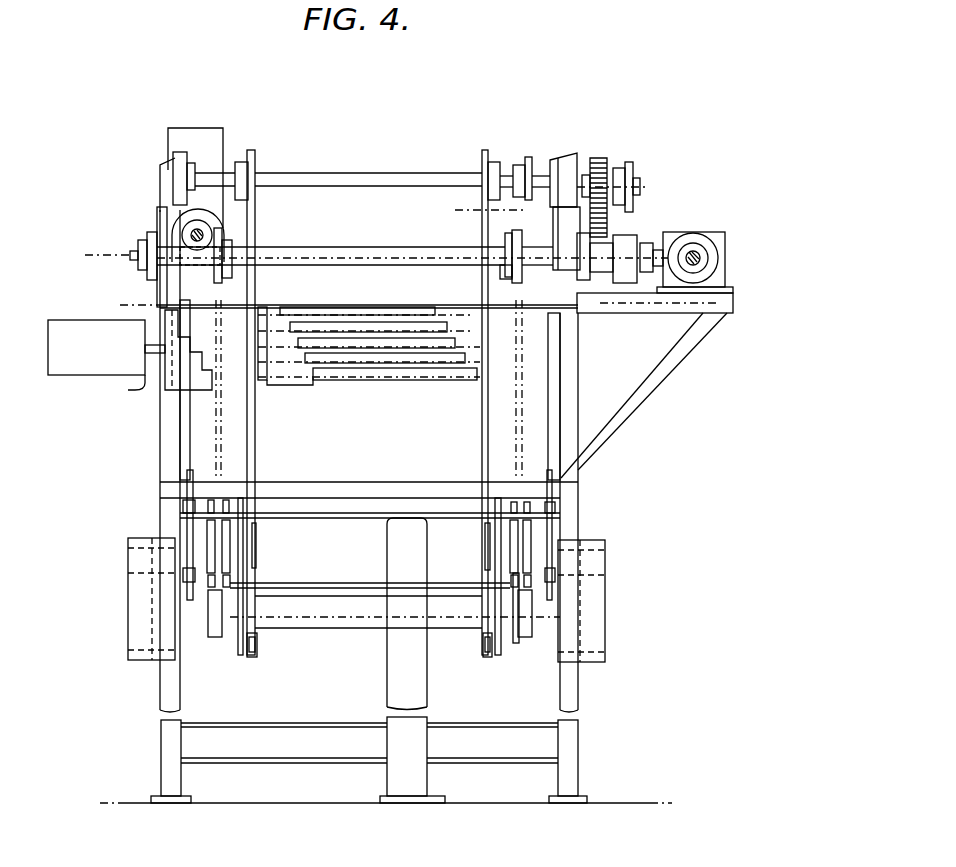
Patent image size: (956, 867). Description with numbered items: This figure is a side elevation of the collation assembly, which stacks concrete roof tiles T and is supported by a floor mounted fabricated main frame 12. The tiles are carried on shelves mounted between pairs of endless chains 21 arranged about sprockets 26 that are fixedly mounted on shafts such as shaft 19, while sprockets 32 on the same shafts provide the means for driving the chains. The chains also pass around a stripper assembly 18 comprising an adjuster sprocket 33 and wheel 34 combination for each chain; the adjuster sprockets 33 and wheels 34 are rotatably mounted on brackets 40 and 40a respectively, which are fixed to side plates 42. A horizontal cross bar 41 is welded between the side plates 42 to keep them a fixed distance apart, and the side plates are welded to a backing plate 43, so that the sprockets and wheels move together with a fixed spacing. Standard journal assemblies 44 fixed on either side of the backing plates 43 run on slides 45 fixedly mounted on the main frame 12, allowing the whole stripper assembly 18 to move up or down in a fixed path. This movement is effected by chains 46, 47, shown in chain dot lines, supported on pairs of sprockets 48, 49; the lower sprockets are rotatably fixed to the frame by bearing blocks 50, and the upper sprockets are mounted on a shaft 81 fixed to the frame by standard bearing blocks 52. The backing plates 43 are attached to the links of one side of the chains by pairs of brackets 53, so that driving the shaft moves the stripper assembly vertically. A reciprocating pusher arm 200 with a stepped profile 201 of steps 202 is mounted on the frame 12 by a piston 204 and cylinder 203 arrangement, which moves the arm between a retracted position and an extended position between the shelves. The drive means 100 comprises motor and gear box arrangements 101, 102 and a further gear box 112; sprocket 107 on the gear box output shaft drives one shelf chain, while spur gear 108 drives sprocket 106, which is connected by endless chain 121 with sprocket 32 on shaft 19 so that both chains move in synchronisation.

The drive means 100 is at (122, 175).
The gear box 112 is at (193, 140).
The endless chain 21 is at (251, 150).
The sprocket 26 is at (255, 165).
The shaft 19 is at (360, 176).
The sprocket 32 is at (528, 160).
The sprocket 106 is at (549, 162).
The spur gear 108 is at (600, 160).
The sprocket 107 is at (630, 166).
The motor and gear box arrangement 102 is at (698, 235).
The motor 101 is at (190, 230).
The endless chain 121 is at (472, 208).
The bearing block 52 is at (232, 245).
The shaft 81 is at (376, 258).
The sprocket 48 is at (508, 273).
The reciprocating pusher arm 200 is at (75, 318).
The sprocket 49 is at (215, 278).
The stepped profile 201 is at (175, 342).
The cylinder 203 is at (68, 368).
The piston 204 is at (145, 375).
The concrete roof tile T is at (385, 312).
The step 202 is at (315, 382).
The chain 47 is at (222, 395).
The chain 46 is at (523, 352).
The slide 45 is at (180, 412).
The main frame 12 is at (655, 372).
The backing plate 43 is at (190, 500).
The journal assembly 44 is at (185, 505).
The bracket 53 is at (215, 500).
The bearing block 50 is at (210, 622).
The side plate 42 is at (498, 512).
The bracket 40 is at (258, 532).
The adjuster sprocket 33 is at (258, 553).
The horizontal cross bar 41 is at (345, 622).
The bracket 40a is at (250, 657).
The wheel 34 is at (256, 658).
The stripper assembly 18 is at (262, 636).